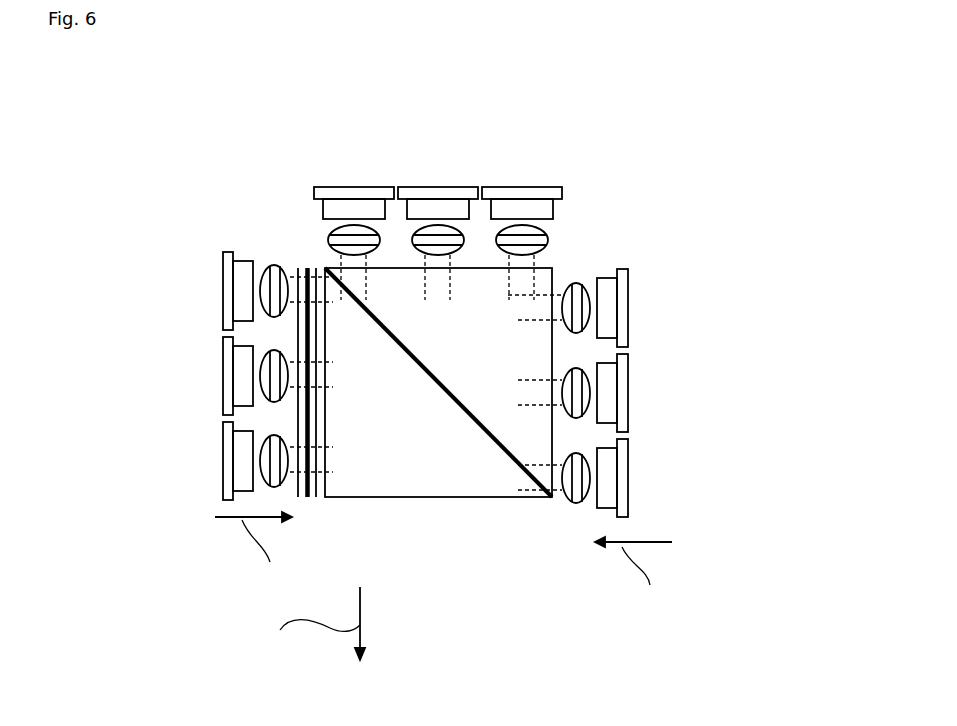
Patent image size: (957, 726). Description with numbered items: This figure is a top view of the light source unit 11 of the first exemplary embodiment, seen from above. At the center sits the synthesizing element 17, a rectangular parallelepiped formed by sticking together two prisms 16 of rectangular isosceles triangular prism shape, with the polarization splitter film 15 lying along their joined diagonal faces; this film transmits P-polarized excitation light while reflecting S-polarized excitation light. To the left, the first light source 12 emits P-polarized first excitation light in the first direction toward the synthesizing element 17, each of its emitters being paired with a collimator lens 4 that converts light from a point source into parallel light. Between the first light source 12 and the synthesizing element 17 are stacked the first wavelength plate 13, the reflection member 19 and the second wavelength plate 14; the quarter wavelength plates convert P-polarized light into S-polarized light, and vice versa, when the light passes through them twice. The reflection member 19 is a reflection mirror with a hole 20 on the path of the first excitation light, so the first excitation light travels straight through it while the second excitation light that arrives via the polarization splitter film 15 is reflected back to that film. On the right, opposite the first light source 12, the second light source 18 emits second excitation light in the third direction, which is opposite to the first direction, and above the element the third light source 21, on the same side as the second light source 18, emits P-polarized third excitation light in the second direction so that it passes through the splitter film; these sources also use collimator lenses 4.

The collimator lens 4 is at (276, 370).
The light source unit 11 is at (638, 118).
The first light source 12 is at (238, 373).
The first wavelength plate 13 is at (305, 490).
The second wavelength plate 14 is at (317, 480).
The polarization splitter film 15 is at (485, 433).
The prism 16 is at (347, 322).
The synthesizing element 17 is at (360, 143).
The second light source 18 is at (607, 395).
The reflection member 19 is at (306, 270).
The hole 20 is at (298, 275).
The third light source 21 is at (440, 207).